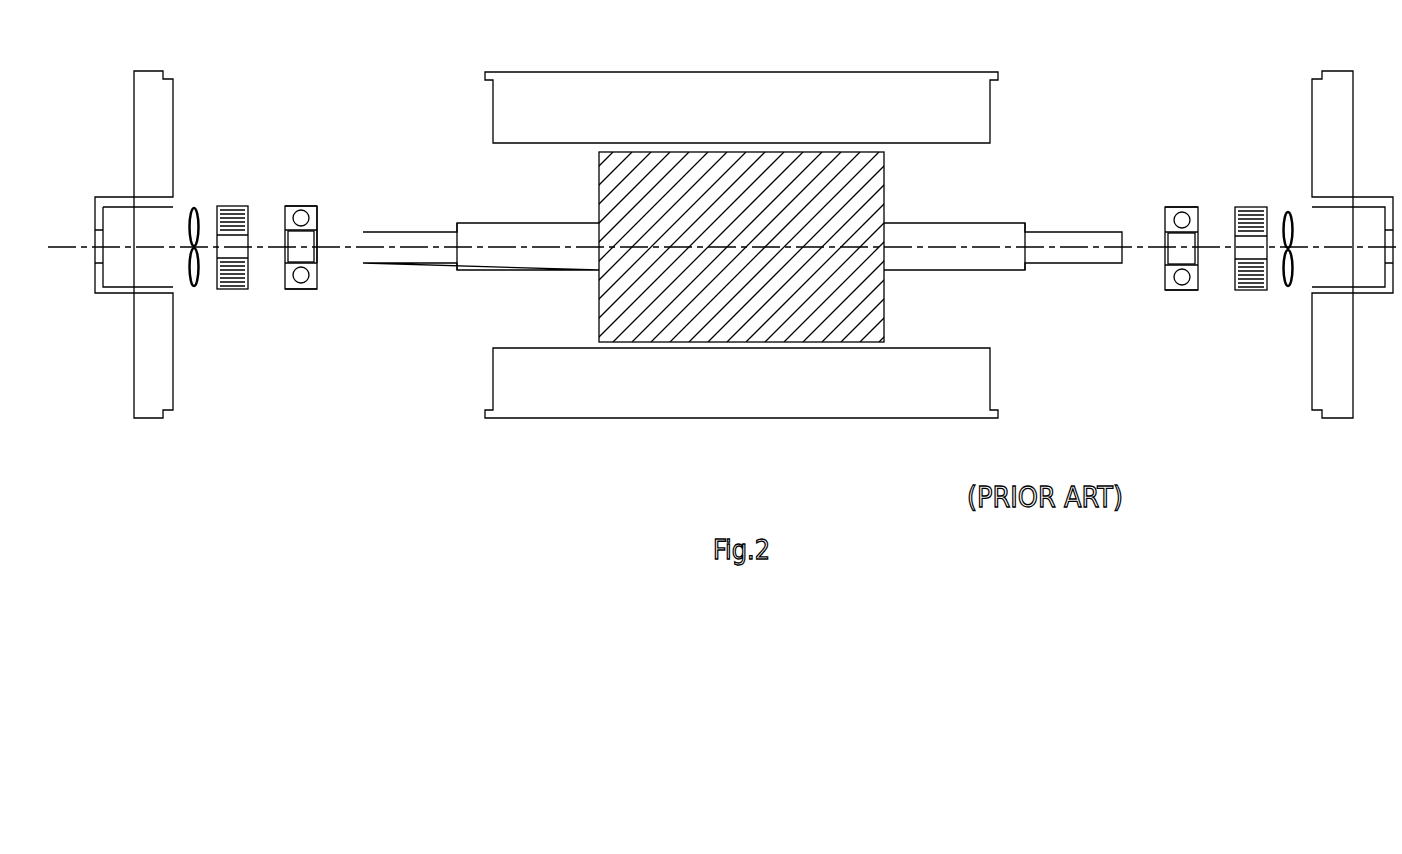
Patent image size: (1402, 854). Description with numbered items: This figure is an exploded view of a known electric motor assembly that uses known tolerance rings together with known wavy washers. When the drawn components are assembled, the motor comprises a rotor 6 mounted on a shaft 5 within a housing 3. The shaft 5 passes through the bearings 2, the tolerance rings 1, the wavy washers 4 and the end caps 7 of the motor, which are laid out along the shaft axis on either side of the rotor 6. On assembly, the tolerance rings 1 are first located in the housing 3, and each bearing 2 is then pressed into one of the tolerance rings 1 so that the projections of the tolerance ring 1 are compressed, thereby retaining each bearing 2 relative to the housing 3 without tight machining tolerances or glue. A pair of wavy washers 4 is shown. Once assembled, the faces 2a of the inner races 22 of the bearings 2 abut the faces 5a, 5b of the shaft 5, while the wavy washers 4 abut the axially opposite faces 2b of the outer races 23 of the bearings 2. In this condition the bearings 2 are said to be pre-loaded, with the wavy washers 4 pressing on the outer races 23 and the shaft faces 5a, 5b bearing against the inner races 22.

The tolerance ring 1 is at (218, 204).
The bearing 2 is at (310, 290).
The face of inner race 2a is at (317, 253).
The face of outer race 2b is at (285, 262).
The inner race 22 is at (317, 247).
The outer race 23 is at (317, 222).
The housing 3 is at (743, 72).
The wavy washer 4 is at (191, 287).
The shaft 5 is at (1025, 223).
The face of shaft 5a is at (457, 223).
The face of shaft 5b is at (1025, 270).
The rotor 6 is at (888, 315).
The end cap 7 is at (134, 71).